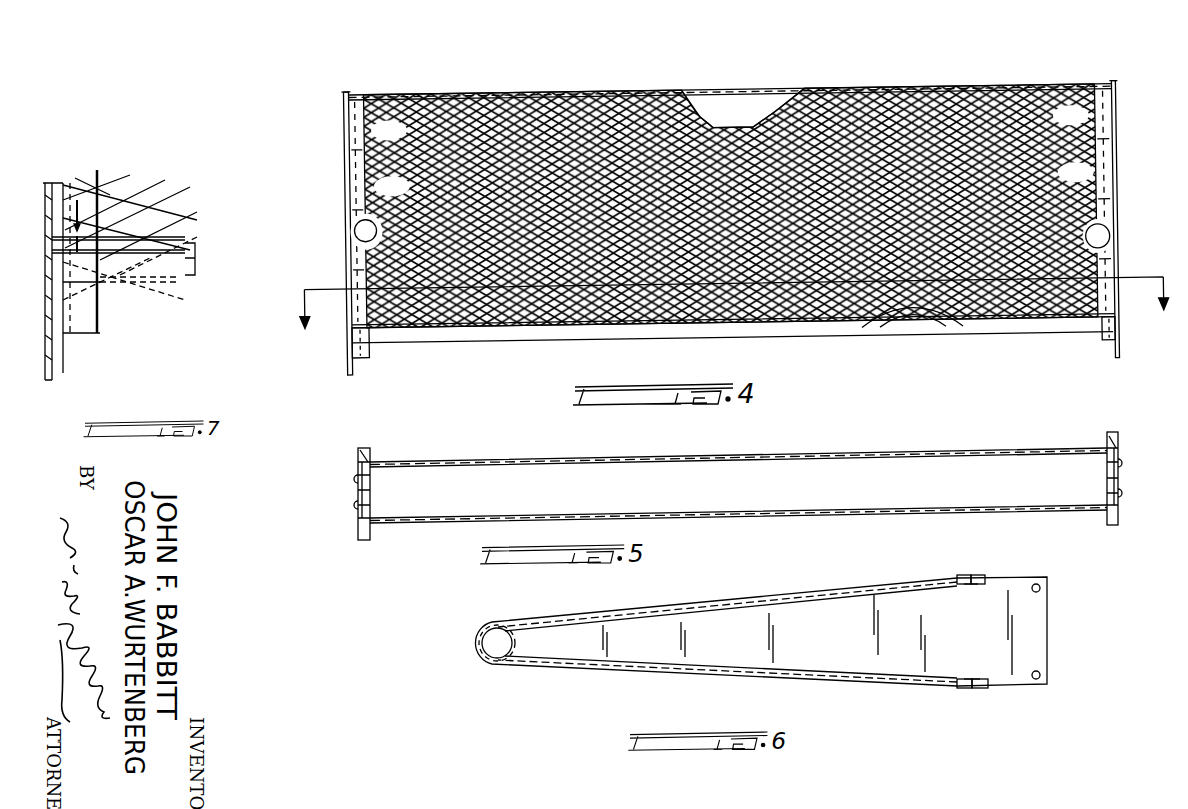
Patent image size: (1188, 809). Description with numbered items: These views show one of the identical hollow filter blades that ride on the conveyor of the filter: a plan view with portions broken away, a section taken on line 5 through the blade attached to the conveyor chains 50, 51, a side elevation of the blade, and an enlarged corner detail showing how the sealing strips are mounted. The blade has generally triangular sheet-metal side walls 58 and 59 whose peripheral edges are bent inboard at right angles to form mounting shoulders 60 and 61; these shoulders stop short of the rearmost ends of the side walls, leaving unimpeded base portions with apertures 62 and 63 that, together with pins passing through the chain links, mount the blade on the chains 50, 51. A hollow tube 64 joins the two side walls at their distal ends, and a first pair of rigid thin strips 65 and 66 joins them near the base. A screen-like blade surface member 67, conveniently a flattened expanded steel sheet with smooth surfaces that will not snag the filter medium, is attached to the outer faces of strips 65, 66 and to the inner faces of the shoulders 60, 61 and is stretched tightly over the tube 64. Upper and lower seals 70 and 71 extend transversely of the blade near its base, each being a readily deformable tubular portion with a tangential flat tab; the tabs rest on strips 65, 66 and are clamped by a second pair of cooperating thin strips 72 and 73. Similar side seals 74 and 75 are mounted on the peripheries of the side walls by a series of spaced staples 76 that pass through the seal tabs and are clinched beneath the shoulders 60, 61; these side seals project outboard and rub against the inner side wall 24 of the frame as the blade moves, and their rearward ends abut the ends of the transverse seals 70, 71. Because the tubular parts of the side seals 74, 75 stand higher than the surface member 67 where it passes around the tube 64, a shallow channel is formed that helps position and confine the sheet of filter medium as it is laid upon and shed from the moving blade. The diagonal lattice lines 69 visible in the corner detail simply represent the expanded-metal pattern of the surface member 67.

In FIG. 4, the section line 5— 5 is at (734, 315).
In FIG. 7, the inner side wall 24 is at (58, 383).
In FIG. 5, the endless chain 50 is at (1116, 438).
In FIG. 5, the endless chain 51 is at (366, 450).
In FIG. 4, the blade side wall 58 is at (350, 352).
In FIG. 6, the blade side wall 58 is at (798, 641).
In FIG. 7, the blade side wall 58 is at (68, 358).
In FIG. 4, the blade side wall 59 is at (1118, 349).
In FIG. 5, the blade side wall 59 is at (358, 478).
In FIG. 4, the mounting shoulder 60 is at (372, 242).
In FIG. 7, the mounting shoulder 60 is at (100, 318).
In FIG. 4, the mounting shoulder 61 is at (1084, 242).
In FIG. 6, the aperture 62 is at (1041, 590).
In FIG. 6, the aperture 63 is at (1044, 676).
In FIG. 4, the hollow tube 64 is at (751, 95).
In FIG. 6, the hollow tube 64 is at (497, 660).
In FIG. 4, the rigid thin strip 65 is at (908, 337).
In FIG. 6, the rigid thin strip 65 is at (972, 587).
In FIG. 7, the rigid thin strip 65 is at (197, 262).
In FIG. 6, the rigid thin strip 66 is at (975, 675).
In FIG. 4, the blade surface member 67 is at (886, 133).
In FIG. 5, the blade surface member 67 is at (870, 459).
In FIG. 7, the lattice wires 69 is at (182, 210).
In FIG. 4, the upper seal 70 is at (541, 338).
In FIG. 6, the upper seal 70 is at (958, 575).
In FIG. 7, the upper seal 70 is at (190, 240).
In FIG. 6, the lower seal 71 is at (960, 690).
In FIG. 4, the thin strip 72 is at (813, 337).
In FIG. 6, the thin strip 72 is at (984, 578).
In FIG. 6, the thin strip 73 is at (990, 690).
In FIG. 4, the side seal 74 is at (352, 92).
In FIG. 6, the side seal 74 is at (756, 592).
In FIG. 7, the side seal 74 is at (55, 183).
In FIG. 4, the side seal 75 is at (1116, 90).
In FIG. 4, the staple 76 is at (368, 131).